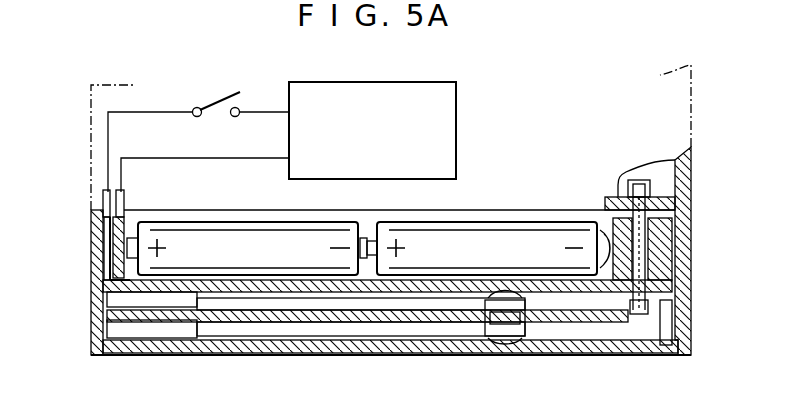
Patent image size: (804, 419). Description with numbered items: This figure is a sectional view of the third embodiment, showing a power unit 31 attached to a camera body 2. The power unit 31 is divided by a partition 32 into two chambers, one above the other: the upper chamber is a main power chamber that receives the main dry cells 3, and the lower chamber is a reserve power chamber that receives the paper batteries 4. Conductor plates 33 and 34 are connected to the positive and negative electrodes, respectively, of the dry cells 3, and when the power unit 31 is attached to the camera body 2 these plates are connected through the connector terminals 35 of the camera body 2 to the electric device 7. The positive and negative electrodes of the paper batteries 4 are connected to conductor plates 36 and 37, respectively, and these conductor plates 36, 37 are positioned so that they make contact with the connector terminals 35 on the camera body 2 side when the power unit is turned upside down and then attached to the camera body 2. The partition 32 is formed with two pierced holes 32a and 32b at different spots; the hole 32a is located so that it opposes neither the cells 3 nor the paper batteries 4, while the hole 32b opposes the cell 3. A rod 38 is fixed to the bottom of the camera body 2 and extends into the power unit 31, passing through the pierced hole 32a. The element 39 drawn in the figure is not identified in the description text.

The camera body 2 is at (686, 130).
The main dry cells 3 is at (231, 222).
The paper batteries 4 is at (265, 310).
The electric device 7 is at (457, 118).
The power unit 31 is at (684, 292).
The partition 32 is at (168, 292).
The pierced hole 32a is at (652, 278).
The pierced hole 32b is at (112, 298).
The conductor plate 33 is at (106, 266).
The conductor plate 34 is at (110, 244).
The connector terminals 35 is at (100, 186).
The conductor plate 36 is at (660, 330).
The conductor plate 37 is at (673, 305).
The rod 38 is at (640, 240).
The connector 39 is at (405, 342).